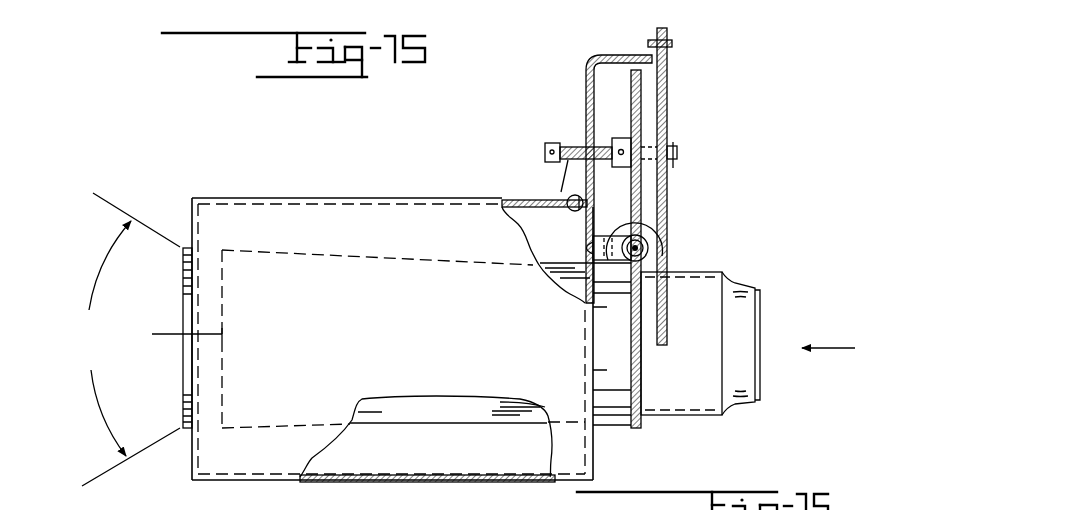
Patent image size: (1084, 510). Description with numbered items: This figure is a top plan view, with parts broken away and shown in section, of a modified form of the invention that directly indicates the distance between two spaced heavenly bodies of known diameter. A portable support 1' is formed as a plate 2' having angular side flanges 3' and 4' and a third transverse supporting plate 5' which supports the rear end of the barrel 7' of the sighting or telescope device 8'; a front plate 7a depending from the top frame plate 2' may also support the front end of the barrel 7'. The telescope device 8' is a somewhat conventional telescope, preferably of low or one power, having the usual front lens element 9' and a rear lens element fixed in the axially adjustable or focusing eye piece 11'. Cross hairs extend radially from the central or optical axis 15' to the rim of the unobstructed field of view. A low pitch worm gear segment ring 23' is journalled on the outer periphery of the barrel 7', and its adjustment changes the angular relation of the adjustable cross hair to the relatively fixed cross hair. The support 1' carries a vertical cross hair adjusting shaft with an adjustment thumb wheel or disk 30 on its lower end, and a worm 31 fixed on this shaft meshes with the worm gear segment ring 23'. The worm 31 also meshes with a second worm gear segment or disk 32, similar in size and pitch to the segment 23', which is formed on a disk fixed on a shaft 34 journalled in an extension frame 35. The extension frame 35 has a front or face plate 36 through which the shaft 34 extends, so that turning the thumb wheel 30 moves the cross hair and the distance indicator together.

The portable support 1' is at (388, 325).
The plate 2' is at (391, 319).
The angular side flange 3' is at (427, 490).
The angular side flange 4' is at (544, 185).
The third transverse supporting plate 5' is at (607, 343).
The front plate 7a is at (192, 226).
The barrel 7' is at (426, 453).
The telescope device 8' is at (445, 460).
The front lens element 9' is at (357, 338).
The eye piece 11' is at (718, 343).
The optical axis 15' is at (141, 339).
The worm gear segment ring 23' is at (608, 344).
The thumb wheel 30 is at (608, 224).
The worm 31 is at (663, 251).
The second worm gear segment 32 is at (632, 108).
The shaft 34 is at (678, 152).
The extension frame 35 is at (590, 63).
The face plate 36 is at (660, 92).